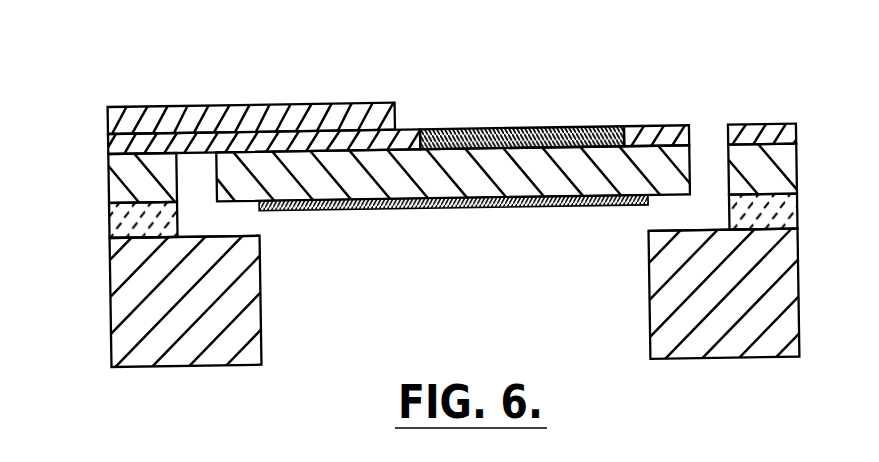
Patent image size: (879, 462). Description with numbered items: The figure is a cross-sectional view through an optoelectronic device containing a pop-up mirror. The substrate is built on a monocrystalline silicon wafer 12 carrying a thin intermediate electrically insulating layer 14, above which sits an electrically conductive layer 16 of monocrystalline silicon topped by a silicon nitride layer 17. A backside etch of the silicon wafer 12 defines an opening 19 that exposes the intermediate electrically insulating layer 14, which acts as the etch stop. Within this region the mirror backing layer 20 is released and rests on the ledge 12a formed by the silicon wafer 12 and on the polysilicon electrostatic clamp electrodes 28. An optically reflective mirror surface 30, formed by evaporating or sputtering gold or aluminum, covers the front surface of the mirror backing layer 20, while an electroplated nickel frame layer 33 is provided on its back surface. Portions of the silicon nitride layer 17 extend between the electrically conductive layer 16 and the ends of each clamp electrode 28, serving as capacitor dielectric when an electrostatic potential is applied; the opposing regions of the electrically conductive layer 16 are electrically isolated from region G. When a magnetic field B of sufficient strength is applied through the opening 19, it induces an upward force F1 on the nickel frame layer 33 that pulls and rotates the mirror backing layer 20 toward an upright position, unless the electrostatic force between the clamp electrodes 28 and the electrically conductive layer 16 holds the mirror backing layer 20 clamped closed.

The monocrystalline silicon wafer 12 is at (108, 305).
The ledge 12a is at (454, 270).
The intermediate electrically insulating layer 14 is at (108, 222).
The electrically conductive layer 16 is at (108, 180).
The silicon nitride layer 17 is at (108, 147).
The opening 19 is at (309, 379).
The mirror backing layer 20 is at (460, 186).
The polysilicon electrostatic clamp electrodes 28 is at (185, 111).
The optically reflective mirror surface 30 is at (497, 212).
The nickel frame layer 33 is at (432, 130).
The region G is at (98, 192).
The upward force F1 is at (688, 128).
The magnetic field B is at (465, 282).